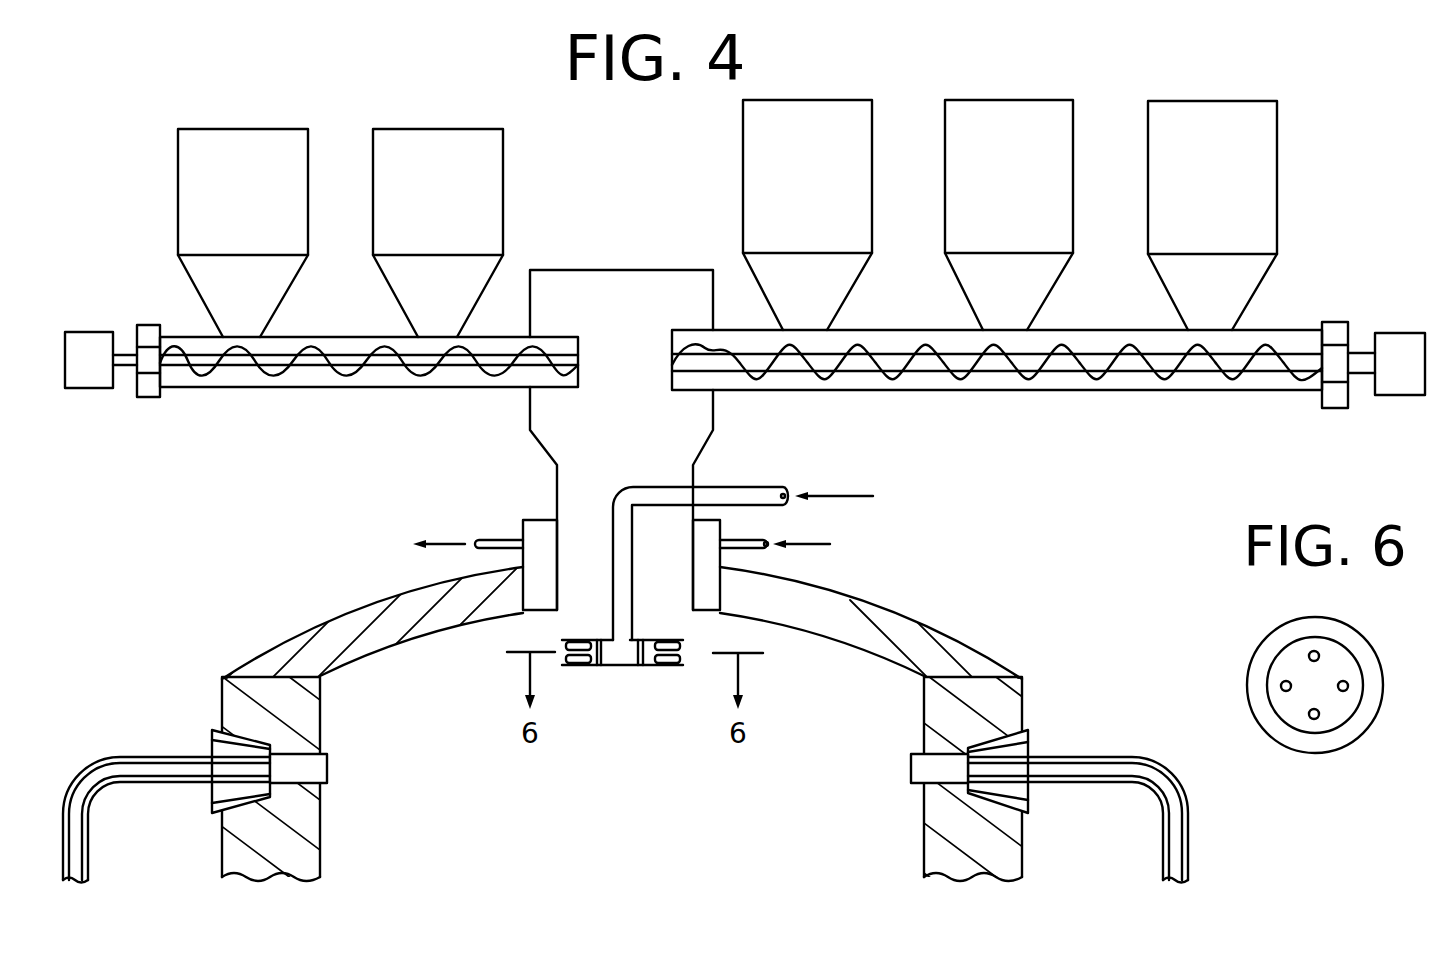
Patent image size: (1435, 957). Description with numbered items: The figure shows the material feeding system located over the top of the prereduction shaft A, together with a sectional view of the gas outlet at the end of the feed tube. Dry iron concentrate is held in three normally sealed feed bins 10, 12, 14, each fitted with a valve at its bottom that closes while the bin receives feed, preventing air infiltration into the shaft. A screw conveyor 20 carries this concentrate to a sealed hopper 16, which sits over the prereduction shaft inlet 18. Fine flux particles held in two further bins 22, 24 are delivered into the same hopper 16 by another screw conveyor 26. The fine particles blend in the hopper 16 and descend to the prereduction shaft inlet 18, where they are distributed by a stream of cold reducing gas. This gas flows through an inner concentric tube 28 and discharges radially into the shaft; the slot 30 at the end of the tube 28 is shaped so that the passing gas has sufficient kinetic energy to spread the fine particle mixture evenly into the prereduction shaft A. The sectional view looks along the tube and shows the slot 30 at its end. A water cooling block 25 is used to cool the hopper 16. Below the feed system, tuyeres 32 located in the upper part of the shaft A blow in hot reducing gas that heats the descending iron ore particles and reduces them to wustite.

In FIG. 4, the feed bin 10 is at (783, 197).
In FIG. 4, the feed bin 12 is at (986, 197).
In FIG. 4, the feed bin 14 is at (1194, 197).
In FIG. 4, the sealed hopper 16 is at (620, 268).
In FIG. 4, the prereduction shaft inlet 18 is at (563, 487).
In FIG. 4, the screw conveyor 20 is at (1013, 388).
In FIG. 4, the bin 22 is at (223, 209).
In FIG. 4, the bin 24 is at (417, 209).
In FIG. 4, the water cooling block 25 is at (547, 560).
In FIG. 4, the screw conveyor 26 is at (353, 379).
In FIG. 4, the inner concentric tube 28 is at (622, 565).
In FIG. 4, the slot 30 is at (683, 641).
In FIG. 6, the slot 30 is at (1267, 638).
In FIG. 4, the tuyeres 32 is at (1028, 748).
In FIG. 4, the prereduction shaft A is at (927, 608).